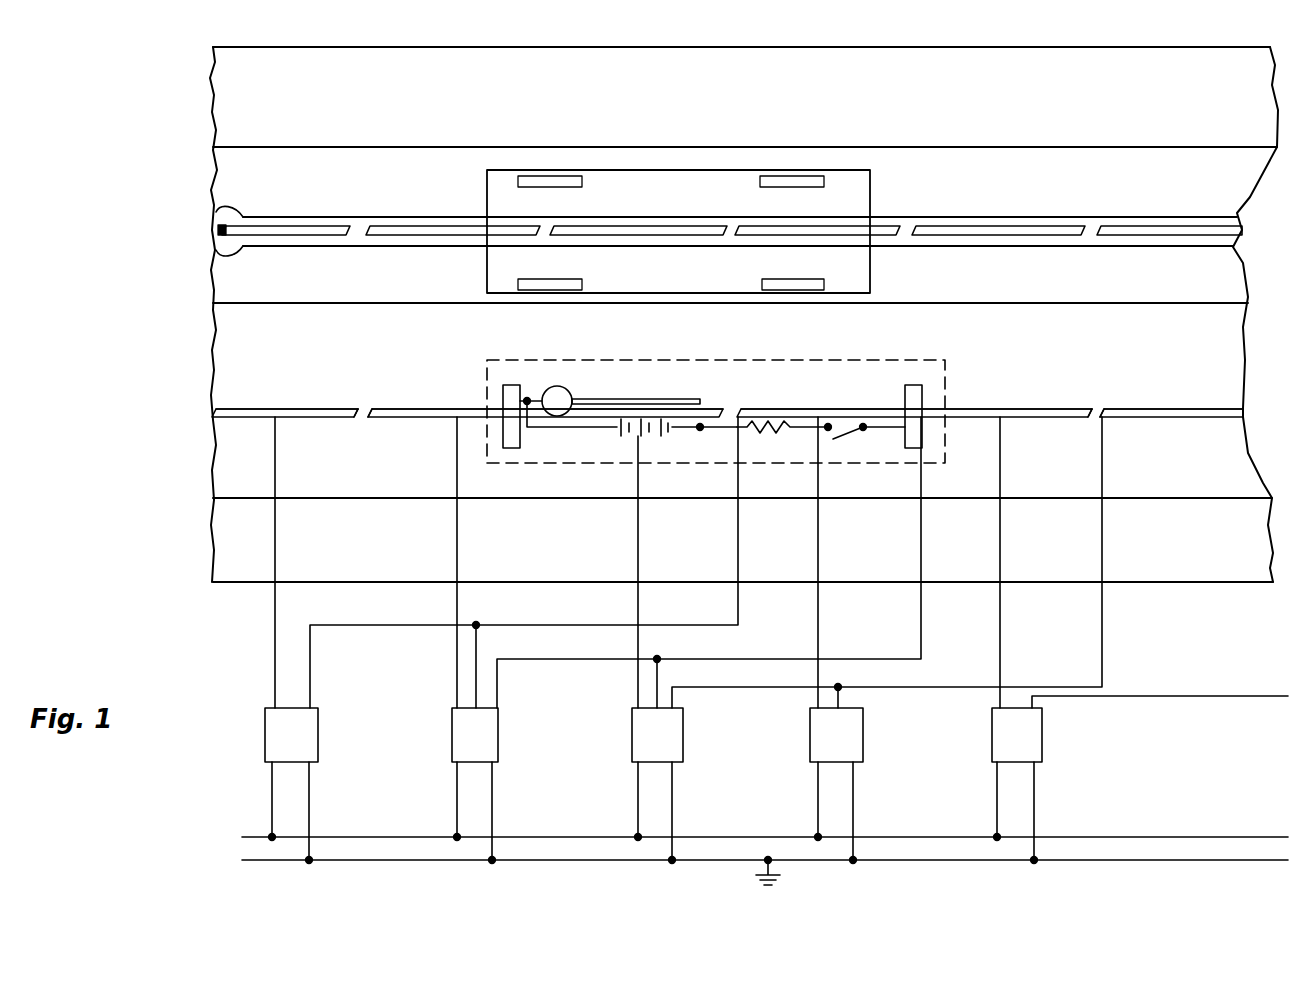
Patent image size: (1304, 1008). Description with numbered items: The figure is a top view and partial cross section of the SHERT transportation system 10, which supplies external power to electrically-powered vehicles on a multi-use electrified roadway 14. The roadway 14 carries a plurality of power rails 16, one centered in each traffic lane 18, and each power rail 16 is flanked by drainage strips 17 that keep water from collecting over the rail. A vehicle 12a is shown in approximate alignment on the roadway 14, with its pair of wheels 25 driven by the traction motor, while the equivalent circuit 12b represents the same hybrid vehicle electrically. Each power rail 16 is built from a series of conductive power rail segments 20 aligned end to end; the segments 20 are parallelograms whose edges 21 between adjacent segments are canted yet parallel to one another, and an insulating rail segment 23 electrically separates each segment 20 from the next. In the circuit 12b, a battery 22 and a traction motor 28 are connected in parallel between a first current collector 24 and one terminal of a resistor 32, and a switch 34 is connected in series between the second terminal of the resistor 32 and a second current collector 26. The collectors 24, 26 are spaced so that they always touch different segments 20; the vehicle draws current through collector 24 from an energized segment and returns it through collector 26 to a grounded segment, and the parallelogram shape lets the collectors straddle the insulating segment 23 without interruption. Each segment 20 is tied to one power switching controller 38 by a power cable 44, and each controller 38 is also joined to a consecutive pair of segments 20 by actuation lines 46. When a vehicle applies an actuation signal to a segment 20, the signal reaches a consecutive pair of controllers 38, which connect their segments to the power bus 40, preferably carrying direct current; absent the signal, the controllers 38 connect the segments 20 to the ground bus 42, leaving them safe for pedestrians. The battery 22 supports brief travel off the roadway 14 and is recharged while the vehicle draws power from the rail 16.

The SHERT transportation system 10 is at (175, 128).
The electrically-powered vehicle 12a is at (872, 196).
The electrically-powered vehicle (equivalent circuit representation) 12b is at (945, 362).
The electrified roadway 14 is at (213, 150).
The power rail 16 is at (218, 230).
The drainage strip 17 is at (218, 205).
The traffic lane 18 is at (228, 176).
The power rail segment 20 is at (432, 407).
The edge 21 is at (360, 406).
The battery 22 is at (618, 435).
The insulating rail segment 23 is at (1098, 407).
The current collector 24 is at (512, 450).
The wheel 25 is at (568, 181).
The current collector 26 is at (905, 448).
The traction motor 28 is at (553, 387).
The resistor 32 is at (765, 420).
The switch 34 is at (835, 442).
The power switching controller 38 is at (318, 750).
The power bus 40 is at (1092, 837).
The ground bus 42 is at (1140, 860).
The power cable 44 is at (457, 600).
The actuation line 46 is at (738, 603).